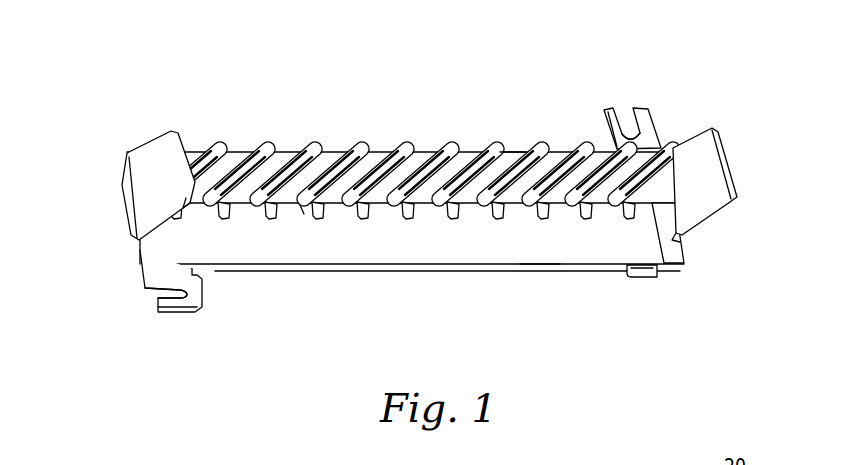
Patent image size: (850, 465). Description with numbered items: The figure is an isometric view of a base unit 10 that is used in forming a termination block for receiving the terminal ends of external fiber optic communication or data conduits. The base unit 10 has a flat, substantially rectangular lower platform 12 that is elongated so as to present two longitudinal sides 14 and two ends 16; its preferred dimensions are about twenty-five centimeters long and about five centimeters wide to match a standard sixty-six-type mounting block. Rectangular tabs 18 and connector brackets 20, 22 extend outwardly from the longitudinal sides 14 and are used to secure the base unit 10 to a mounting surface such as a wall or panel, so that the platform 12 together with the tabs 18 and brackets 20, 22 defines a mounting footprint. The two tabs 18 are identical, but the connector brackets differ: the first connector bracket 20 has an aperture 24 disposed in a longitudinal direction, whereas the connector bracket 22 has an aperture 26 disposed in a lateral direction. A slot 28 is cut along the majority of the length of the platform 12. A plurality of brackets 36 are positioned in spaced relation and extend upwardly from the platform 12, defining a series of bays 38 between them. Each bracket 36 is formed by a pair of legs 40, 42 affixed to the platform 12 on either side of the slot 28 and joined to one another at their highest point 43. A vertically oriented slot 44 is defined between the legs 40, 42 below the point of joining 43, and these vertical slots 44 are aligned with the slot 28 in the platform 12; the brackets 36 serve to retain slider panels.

The base unit 10 is at (781, 118).
The lower platform 12 is at (353, 253).
The longitudinal sides 14 is at (512, 150).
The ends 16 is at (124, 158).
The rectangular tabs 18 is at (643, 278).
The first connector bracket 20 is at (182, 316).
The connector bracket 22 is at (642, 115).
The aperture 24 is at (160, 289).
The aperture 26 is at (628, 118).
The slot 28 is at (312, 204).
The brackets 36 is at (358, 147).
The bays 38 is at (585, 219).
The leg 40 is at (200, 153).
The leg 42 is at (224, 218).
The highest point 43 is at (500, 150).
The vertical slot 44 is at (208, 152).